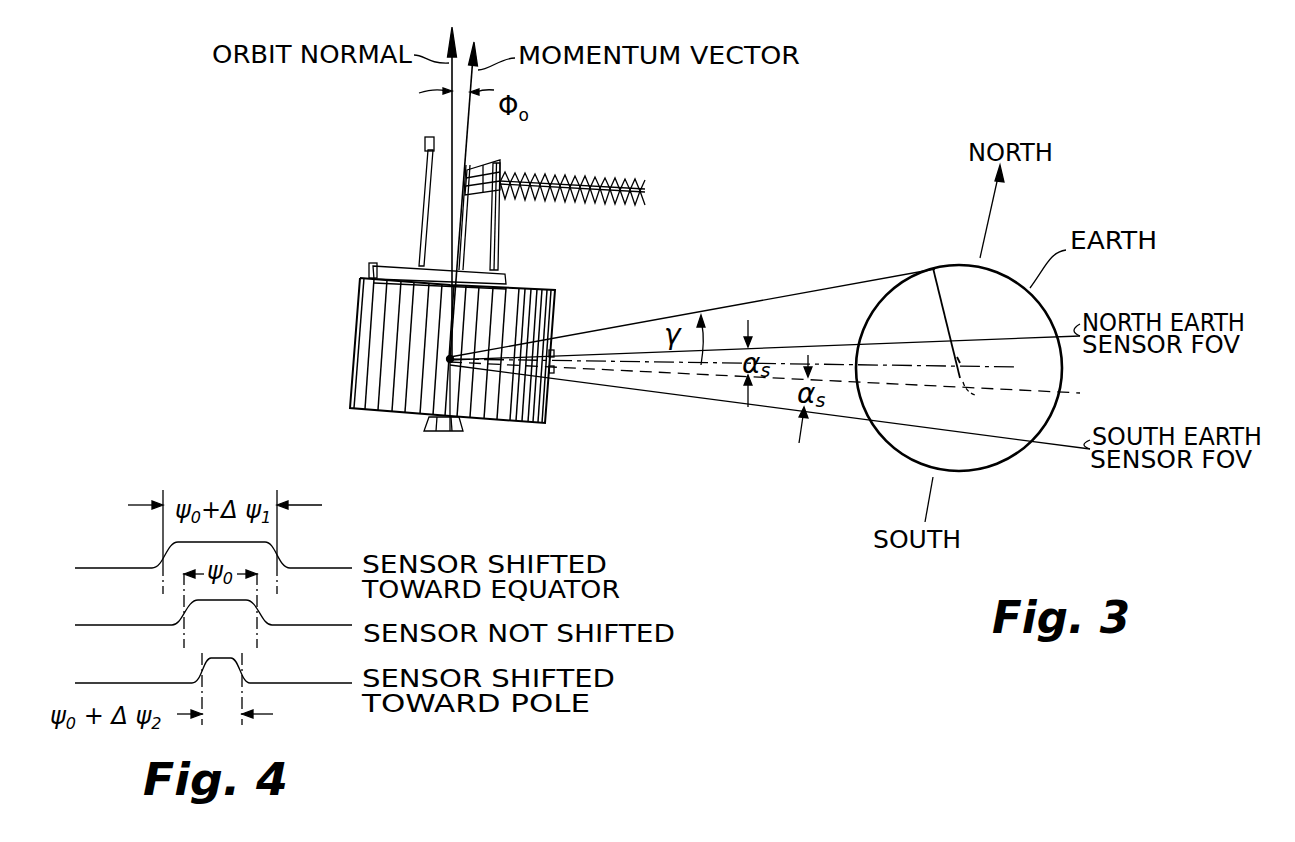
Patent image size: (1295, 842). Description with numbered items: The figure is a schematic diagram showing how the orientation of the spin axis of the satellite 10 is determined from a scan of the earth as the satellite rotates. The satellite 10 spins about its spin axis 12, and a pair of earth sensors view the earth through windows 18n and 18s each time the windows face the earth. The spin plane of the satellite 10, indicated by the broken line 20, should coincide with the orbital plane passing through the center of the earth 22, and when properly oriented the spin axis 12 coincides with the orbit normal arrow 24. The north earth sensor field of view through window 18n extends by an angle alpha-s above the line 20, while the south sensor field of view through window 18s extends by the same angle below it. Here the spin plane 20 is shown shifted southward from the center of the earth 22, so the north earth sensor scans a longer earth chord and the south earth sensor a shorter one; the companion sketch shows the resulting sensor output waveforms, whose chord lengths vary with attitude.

The satellite 10 is at (328, 260).
The spin axis 12 is at (469, 124).
The north earth sensor window 18n is at (562, 348).
The south earth sensor window 18s is at (556, 374).
The spin plane 20 is at (987, 400).
The center of the earth 22 is at (963, 363).
The orbit normal arrow 24 is at (449, 110).